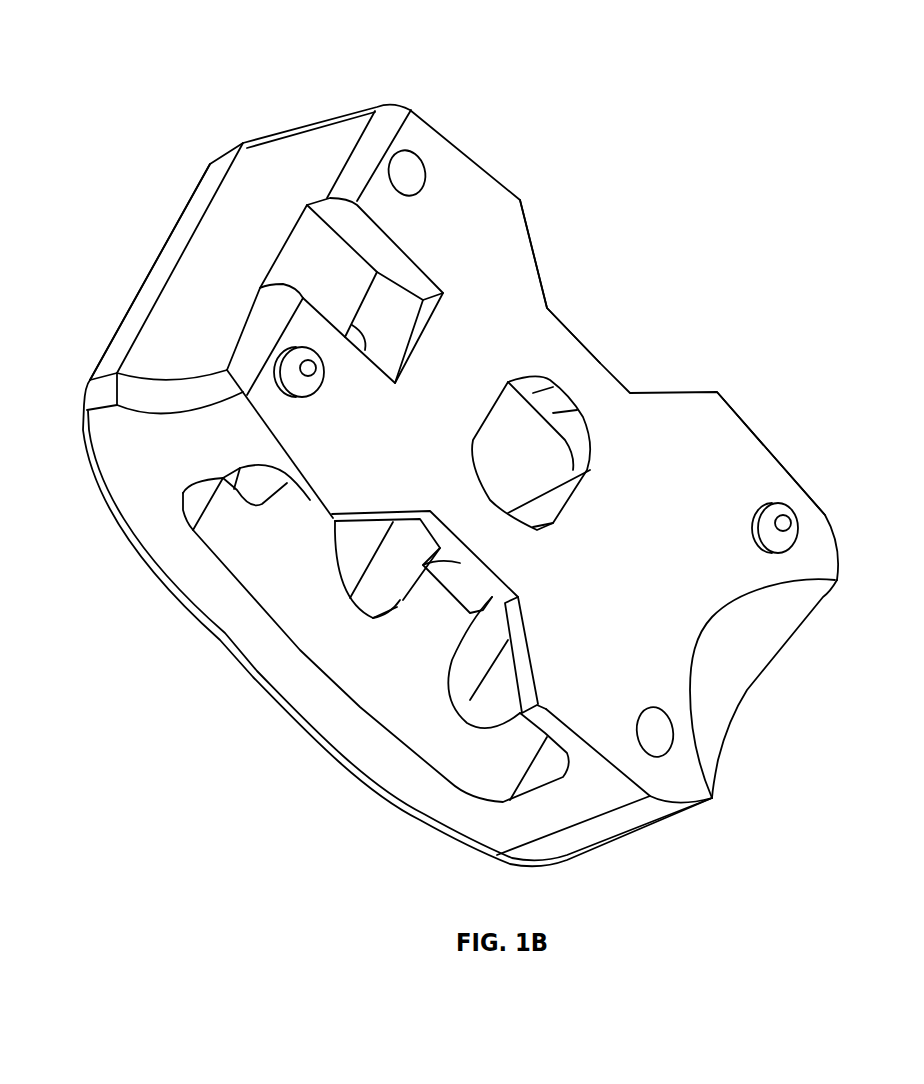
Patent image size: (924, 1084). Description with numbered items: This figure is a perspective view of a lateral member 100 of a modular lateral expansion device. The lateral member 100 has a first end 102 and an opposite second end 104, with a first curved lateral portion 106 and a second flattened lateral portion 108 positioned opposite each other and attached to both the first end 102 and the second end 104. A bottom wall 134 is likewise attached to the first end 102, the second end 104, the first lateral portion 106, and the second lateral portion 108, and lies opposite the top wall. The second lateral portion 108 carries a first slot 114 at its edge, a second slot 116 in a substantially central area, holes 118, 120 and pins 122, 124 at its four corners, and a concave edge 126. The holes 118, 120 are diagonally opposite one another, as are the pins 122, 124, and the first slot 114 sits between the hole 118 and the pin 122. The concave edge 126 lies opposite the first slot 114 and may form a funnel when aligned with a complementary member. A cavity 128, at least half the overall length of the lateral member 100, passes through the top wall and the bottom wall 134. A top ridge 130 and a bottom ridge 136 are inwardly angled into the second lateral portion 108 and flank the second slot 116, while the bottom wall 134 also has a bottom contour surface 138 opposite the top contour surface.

The lateral member 100 is at (148, 831).
The first end 102 is at (153, 277).
The second end 104 is at (845, 733).
The first curved lateral portion 106 is at (253, 536).
The second flattened lateral portion 108 is at (750, 473).
The first slot 114 is at (327, 267).
The second slot 116 is at (522, 450).
The hole 118 is at (411, 152).
The hole 120 is at (674, 740).
The pin 122 is at (277, 364).
The pin 124 is at (798, 524).
The concave edge 126 is at (768, 623).
The cavity 128 is at (277, 620).
The top ridge 130 is at (563, 323).
The bottom wall 134 is at (340, 762).
The bottom ridge 136 is at (495, 585).
The bottom contour surface 138 is at (213, 590).